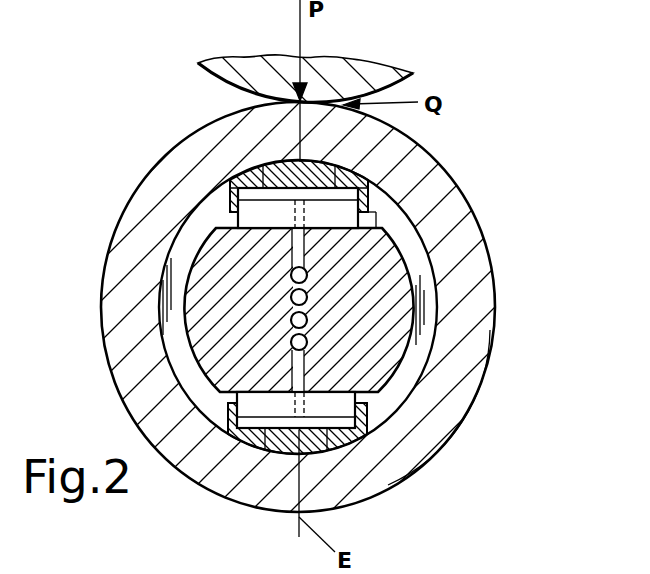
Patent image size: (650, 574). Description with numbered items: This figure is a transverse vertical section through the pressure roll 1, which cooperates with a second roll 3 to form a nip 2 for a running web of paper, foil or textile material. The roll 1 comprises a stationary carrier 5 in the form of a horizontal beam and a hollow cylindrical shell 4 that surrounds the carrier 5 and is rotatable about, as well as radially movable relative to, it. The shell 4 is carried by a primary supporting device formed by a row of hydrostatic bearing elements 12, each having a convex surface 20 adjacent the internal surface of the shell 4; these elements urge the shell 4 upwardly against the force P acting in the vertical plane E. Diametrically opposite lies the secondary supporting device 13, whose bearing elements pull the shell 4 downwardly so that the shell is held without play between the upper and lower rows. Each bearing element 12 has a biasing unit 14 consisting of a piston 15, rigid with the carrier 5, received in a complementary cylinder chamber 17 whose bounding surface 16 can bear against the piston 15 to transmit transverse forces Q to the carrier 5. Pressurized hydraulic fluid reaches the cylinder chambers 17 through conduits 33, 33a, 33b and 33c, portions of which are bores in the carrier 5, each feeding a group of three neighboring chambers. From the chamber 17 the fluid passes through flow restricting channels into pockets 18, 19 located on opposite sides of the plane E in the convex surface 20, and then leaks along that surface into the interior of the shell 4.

The pressure roll 1 is at (468, 200).
The nip 2 is at (262, 97).
The roll 3 is at (382, 73).
The hollow cylindrical shell 4 is at (428, 427).
The stationary carrier 5 is at (388, 322).
The hydrostatic bearing element 12 is at (250, 165).
The secondary supporting device 13 is at (260, 450).
The biasing unit 14 is at (264, 215).
The piston 15 is at (322, 207).
The surface bounding the cylinder chamber 16 is at (237, 185).
The cylinder chamber 17 is at (240, 178).
The pocket 18 is at (265, 160).
The pocket 19 is at (366, 183).
The convex surface 20 is at (245, 172).
The conduit 33 is at (291, 273).
The conduit 33a is at (291, 297).
The conduit 33b is at (291, 321).
The conduit 33c is at (291, 345).